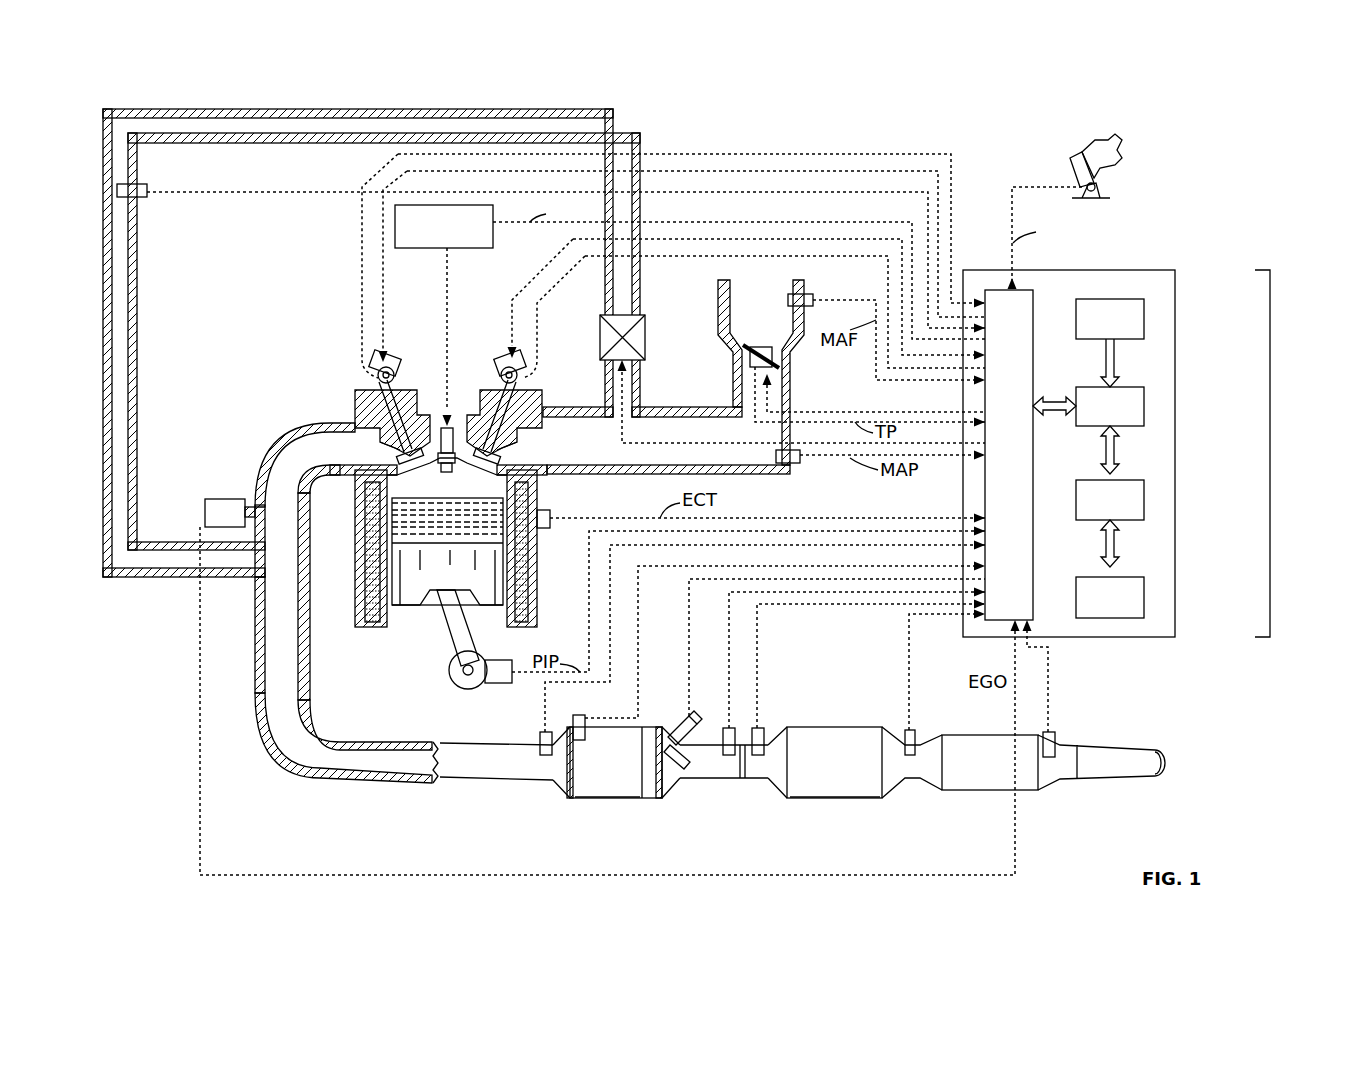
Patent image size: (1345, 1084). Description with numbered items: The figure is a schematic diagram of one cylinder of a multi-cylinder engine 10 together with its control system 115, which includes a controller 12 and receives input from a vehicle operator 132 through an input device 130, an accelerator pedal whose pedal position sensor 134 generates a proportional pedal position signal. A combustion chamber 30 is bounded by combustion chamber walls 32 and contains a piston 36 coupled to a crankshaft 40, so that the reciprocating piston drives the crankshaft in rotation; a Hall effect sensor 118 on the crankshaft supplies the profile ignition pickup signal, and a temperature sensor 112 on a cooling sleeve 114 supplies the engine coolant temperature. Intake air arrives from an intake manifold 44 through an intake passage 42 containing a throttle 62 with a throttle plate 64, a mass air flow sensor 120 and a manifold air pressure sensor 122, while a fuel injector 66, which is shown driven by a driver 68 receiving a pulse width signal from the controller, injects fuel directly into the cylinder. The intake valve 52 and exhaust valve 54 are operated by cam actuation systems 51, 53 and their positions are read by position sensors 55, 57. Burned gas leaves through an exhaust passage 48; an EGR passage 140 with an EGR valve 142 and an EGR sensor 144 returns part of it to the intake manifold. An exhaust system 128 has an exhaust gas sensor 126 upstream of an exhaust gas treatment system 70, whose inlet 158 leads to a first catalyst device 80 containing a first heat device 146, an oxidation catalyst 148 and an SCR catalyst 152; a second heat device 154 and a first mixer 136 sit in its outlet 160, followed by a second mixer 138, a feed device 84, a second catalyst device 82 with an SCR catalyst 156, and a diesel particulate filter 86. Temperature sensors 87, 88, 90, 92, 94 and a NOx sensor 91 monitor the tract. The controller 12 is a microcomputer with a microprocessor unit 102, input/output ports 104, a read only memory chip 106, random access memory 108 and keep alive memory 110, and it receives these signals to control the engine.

The engine 10 is at (296, 351).
The controller 12 is at (1175, 272).
The combustion chamber 30 is at (420, 490).
The combustion chamber walls 32 is at (387, 628).
The piston 36 is at (432, 575).
The crankshaft 40 is at (456, 688).
The intake passage 42 is at (761, 372).
The intake manifold 44 is at (668, 455).
The exhaust passage 48 is at (305, 561).
The cam actuation system 51 is at (500, 358).
The intake valve 52 is at (490, 455).
The cam actuation system 53 is at (398, 358).
The exhaust valve 54 is at (405, 455).
The position sensor 55 is at (522, 380).
The position sensor 57 is at (372, 370).
The throttle 62 is at (775, 360).
The throttle plate 64 is at (745, 350).
The fuel injector 66 is at (450, 425).
The electronic driver 68 is at (690, 269).
The exhaust gas treatment system 70 is at (758, 818).
The first catalyst device 80 is at (616, 762).
The second catalyst device 82 is at (834, 762).
The feed device 84 is at (697, 720).
The diesel particulate filter 86 is at (990, 762).
The temperature sensor 87 is at (546, 715).
The temperature sensor 88 is at (580, 715).
The temperature sensor 90 is at (729, 728).
The NOx sensor 91 is at (758, 728).
The temperature sensor 92 is at (905, 735).
The temperature sensor 94 is at (1047, 732).
The microprocessor unit 102 is at (1144, 403).
The input/output ports 104 is at (1033, 295).
The read only memory chip 106 is at (1144, 312).
The random access memory 108 is at (1144, 500).
The keep alive memory 110 is at (1144, 595).
The temperature sensor 112 is at (548, 510).
The cooling sleeve 114 is at (528, 580).
The control system 115 is at (1270, 395).
The Hall effect sensor 118 is at (498, 683).
The mass air flow sensor 120 is at (806, 294).
The manifold air pressure sensor 122 is at (798, 463).
The exhaust gas sensor 126 is at (205, 503).
The exhaust system 128 is at (293, 766).
The input device 130 is at (1072, 165).
The vehicle operator 132 is at (1122, 150).
The pedal position sensor 134 is at (1110, 190).
The first mixer 136 is at (675, 738).
The second mixer 138 is at (742, 778).
The EGR passage 140 is at (368, 112).
The EGR valve 142 is at (641, 340).
The EGR sensor 144 is at (140, 197).
The first heat device 146 is at (568, 795).
The oxidation catalyst 148 is at (610, 800).
The SCR catalyst 152 is at (642, 800).
The second heat device 154 is at (660, 800).
The SCR catalyst 156 is at (862, 798).
The inlet 158 is at (540, 778).
The outlet 160 is at (693, 761).